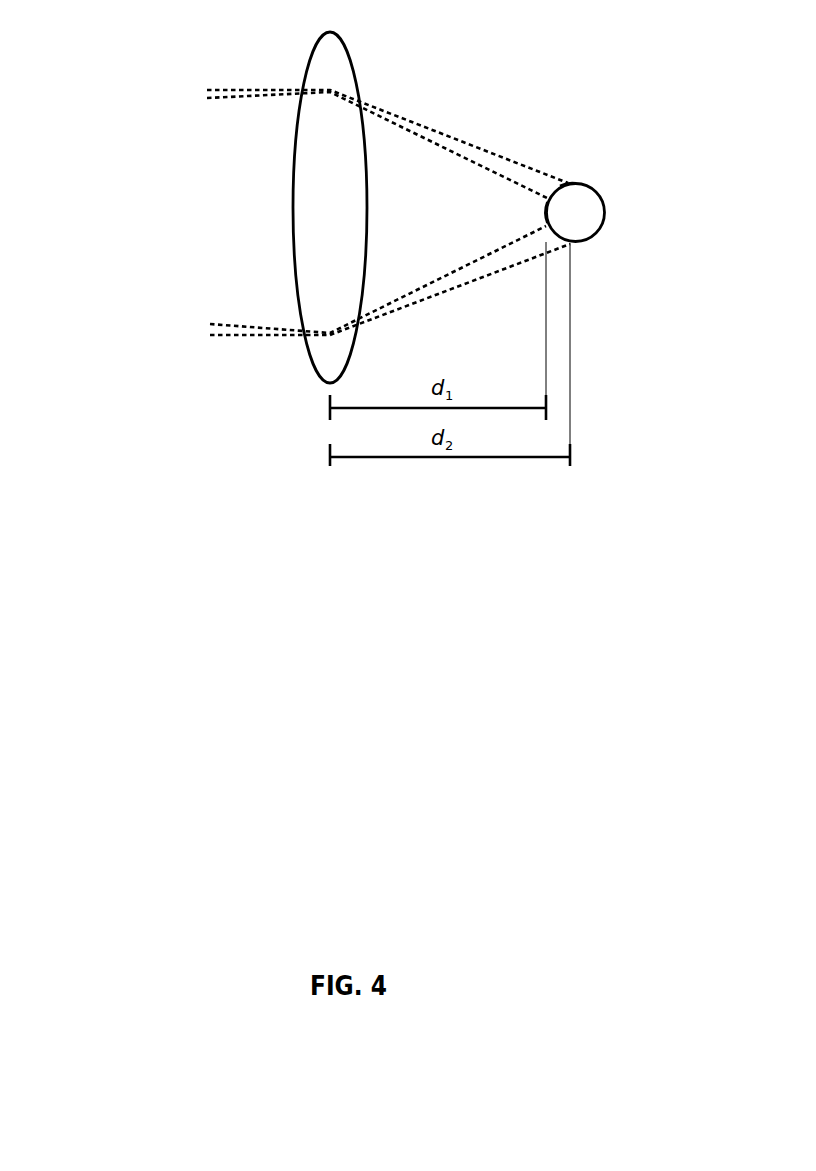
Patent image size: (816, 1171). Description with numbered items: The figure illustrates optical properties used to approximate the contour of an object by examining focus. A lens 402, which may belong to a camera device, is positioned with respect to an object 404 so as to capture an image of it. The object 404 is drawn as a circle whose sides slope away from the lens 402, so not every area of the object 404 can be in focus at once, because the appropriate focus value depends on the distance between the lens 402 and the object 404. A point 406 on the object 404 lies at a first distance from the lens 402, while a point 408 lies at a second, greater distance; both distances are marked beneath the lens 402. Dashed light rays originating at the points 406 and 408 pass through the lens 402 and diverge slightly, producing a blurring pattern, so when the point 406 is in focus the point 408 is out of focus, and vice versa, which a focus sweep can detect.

The lens 402 is at (383, 197).
The object 404 is at (636, 197).
The point 406 is at (546, 213).
The point 408 is at (625, 154).